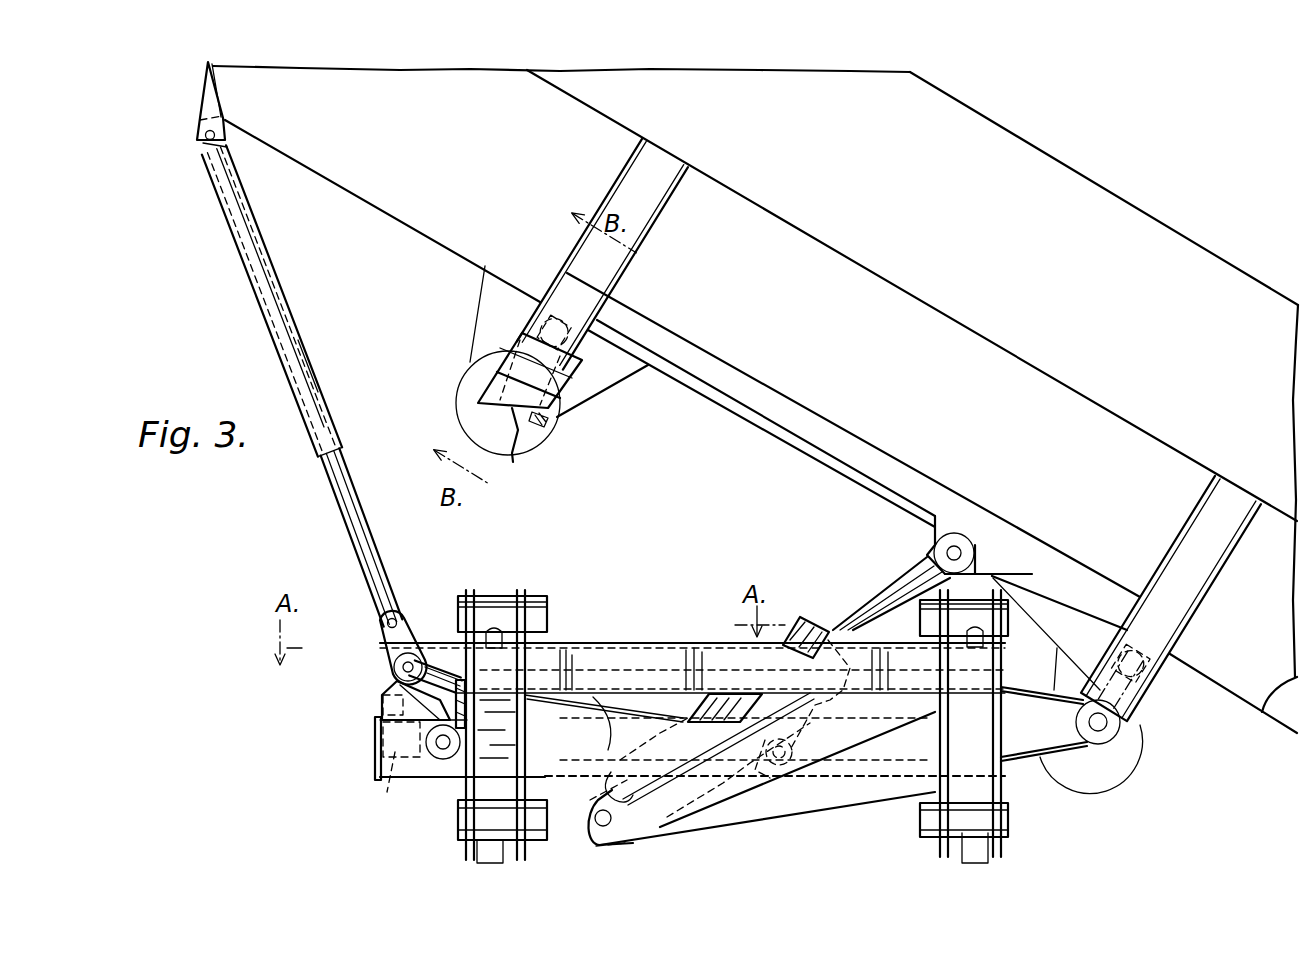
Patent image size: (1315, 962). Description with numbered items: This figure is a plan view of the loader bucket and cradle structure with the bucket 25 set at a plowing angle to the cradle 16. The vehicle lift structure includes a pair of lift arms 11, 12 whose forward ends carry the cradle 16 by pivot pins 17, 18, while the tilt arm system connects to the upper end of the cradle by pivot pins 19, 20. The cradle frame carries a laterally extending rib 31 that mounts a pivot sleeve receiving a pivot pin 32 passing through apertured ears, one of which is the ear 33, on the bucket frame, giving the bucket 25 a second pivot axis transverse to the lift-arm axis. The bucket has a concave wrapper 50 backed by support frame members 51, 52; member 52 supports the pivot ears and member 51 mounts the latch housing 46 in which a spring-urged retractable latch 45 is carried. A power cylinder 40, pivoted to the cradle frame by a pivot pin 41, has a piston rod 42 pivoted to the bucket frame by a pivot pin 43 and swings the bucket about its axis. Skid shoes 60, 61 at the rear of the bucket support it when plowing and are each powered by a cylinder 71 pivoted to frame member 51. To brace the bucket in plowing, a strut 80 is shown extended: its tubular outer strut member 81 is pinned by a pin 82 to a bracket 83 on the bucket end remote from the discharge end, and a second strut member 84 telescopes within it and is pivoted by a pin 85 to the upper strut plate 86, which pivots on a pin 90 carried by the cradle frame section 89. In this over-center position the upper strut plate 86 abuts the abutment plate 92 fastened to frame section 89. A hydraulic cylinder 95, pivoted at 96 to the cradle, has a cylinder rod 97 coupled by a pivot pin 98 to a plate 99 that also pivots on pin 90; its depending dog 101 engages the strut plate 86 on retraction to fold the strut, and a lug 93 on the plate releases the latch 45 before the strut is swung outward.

The lift arm 11 is at (982, 852).
The lift arm 12 is at (476, 851).
The cradle 16 is at (626, 632).
The pivot pin 17 is at (460, 828).
The pivot pin 18 is at (1006, 823).
The pivot pin 19 is at (501, 602).
The pivot pin 20 is at (975, 617).
The bucket 25 is at (1043, 155).
The laterally extending rib 31 is at (1022, 750).
The pivot pin 32 is at (1103, 726).
The apertured ear 33 is at (1112, 738).
The power cylinder 40 is at (803, 632).
The pivot pin 41 is at (600, 824).
The piston rod 42 is at (852, 612).
The pivot pin 43 is at (946, 553).
The retractable latch 45 is at (549, 424).
The latch housing 46 is at (526, 444).
The concave wrapper 50 is at (896, 362).
The support frame member 51 is at (646, 240).
The support frame member 52 is at (1210, 592).
The skid shoe 60 is at (458, 386).
The skid shoe 61 is at (1105, 785).
The cylinder 71 is at (541, 300).
The strut 80 is at (276, 358).
The tubular outer strut member 81 is at (286, 273).
The pin 82 is at (204, 138).
The bracket 83 is at (206, 97).
The second strut member 84 is at (350, 515).
The pin 85 is at (396, 616).
The upper strut plate 86 is at (382, 645).
The frame section 89 is at (375, 770).
The pin 90 is at (443, 752).
The abutment plate 92 is at (381, 784).
The lug 93 is at (376, 748).
The hydraulic cylinder 95 is at (593, 740).
The pivot 96 is at (794, 748).
The cylinder rod 97 is at (441, 670).
The pivot pin 98 is at (416, 656).
The plate 99 is at (382, 694).
The dog 101 is at (382, 701).